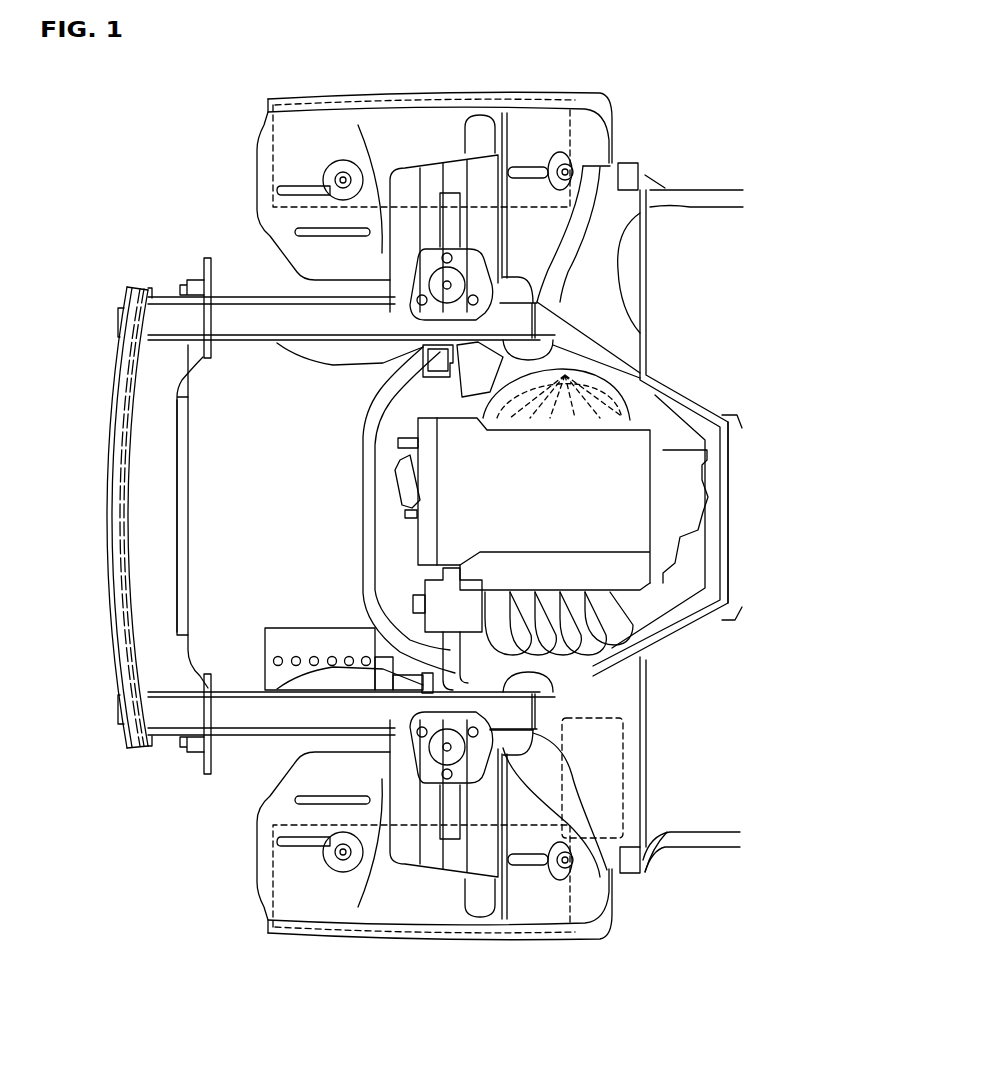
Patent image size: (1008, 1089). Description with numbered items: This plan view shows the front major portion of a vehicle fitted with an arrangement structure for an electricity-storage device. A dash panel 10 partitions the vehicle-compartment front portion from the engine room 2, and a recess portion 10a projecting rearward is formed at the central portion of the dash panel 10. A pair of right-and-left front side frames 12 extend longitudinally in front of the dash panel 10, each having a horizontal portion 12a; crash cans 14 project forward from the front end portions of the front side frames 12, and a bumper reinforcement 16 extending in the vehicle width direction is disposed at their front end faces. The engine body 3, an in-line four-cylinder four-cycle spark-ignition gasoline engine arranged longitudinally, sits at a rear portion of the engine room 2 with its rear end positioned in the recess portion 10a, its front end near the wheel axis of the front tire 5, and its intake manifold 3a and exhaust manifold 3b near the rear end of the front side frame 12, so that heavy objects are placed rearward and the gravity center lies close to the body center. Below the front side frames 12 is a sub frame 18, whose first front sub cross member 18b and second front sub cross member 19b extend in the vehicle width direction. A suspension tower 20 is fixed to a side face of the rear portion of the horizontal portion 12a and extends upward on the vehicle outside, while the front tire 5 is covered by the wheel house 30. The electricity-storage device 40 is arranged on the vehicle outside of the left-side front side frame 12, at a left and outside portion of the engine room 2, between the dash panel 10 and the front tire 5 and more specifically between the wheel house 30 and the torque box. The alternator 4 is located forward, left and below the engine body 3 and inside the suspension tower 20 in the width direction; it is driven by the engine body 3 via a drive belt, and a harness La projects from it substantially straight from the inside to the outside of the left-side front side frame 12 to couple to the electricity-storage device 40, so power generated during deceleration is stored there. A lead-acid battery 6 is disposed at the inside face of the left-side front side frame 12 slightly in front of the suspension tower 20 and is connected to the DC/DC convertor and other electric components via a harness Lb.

The engine room 2 is at (331, 426).
The engine body 3 is at (533, 498).
The intake manifold 3a is at (580, 620).
The exhaust manifold 3b is at (609, 384).
The alternator 4 is at (424, 587).
The front tire 5 is at (287, 124).
The lead-acid battery 6 is at (297, 640).
The dash panel 10 is at (648, 225).
The recess portion 10a is at (712, 592).
The front side frame 12 is at (268, 325).
The horizontal portion 12a is at (310, 315).
The crash can 14 is at (172, 297).
The bumper reinforcement 16 is at (107, 521).
The sub frame 18 is at (368, 574).
The first front sub cross member 18b is at (375, 515).
The second front sub cross member 19b is at (188, 523).
The suspension tower 20 is at (420, 267).
The wheel house 30 is at (590, 132).
The electricity-storage device 40 is at (655, 856).
The harness La is at (640, 690).
The harness Lb is at (440, 640).